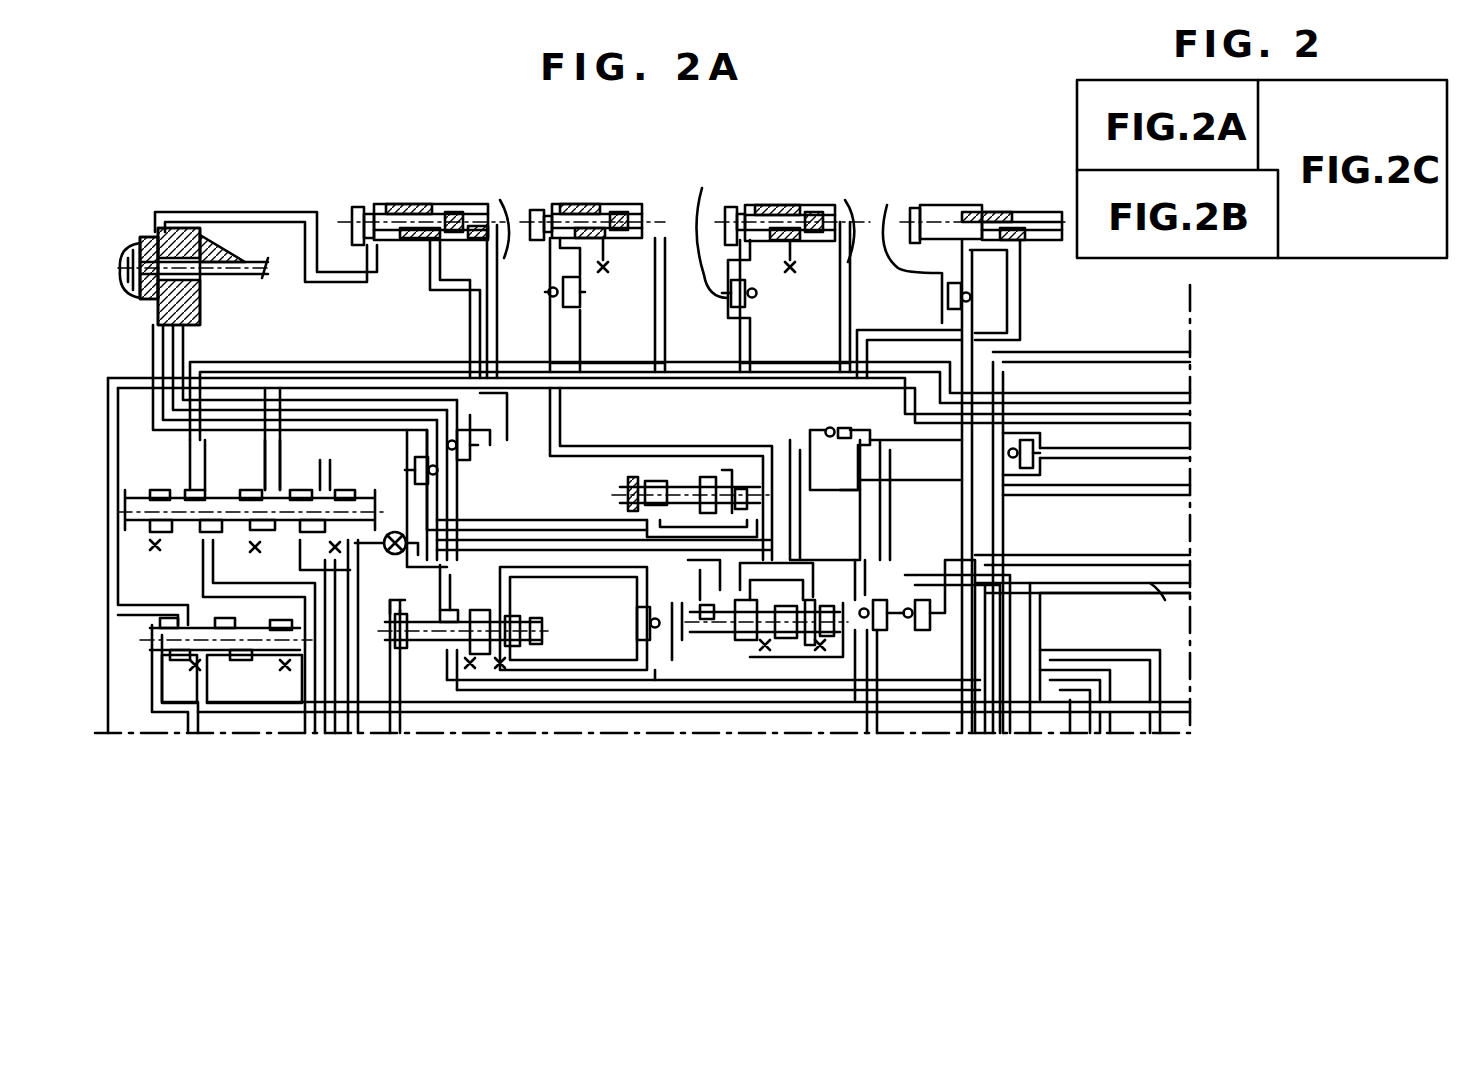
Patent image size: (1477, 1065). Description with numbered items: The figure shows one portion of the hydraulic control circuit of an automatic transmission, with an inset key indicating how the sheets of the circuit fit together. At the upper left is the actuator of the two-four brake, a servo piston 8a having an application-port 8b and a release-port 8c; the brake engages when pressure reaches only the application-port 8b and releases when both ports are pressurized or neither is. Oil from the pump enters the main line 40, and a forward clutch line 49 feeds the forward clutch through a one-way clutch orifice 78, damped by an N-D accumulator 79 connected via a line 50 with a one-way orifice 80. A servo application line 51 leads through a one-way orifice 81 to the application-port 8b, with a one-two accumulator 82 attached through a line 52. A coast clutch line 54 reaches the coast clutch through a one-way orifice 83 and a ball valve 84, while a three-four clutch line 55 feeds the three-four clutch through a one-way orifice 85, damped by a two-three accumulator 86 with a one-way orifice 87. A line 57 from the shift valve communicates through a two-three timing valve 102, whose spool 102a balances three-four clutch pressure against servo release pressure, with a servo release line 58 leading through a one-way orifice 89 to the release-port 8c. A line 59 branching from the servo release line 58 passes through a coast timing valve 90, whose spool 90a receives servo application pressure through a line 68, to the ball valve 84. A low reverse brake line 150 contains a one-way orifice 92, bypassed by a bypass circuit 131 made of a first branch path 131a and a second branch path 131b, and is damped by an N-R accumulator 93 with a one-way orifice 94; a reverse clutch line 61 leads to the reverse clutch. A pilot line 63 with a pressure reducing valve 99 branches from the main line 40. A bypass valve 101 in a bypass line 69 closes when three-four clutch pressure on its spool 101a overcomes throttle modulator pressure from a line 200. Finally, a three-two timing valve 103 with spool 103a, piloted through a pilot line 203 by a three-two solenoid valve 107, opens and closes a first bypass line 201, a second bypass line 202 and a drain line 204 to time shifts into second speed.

The actuator of the 2-4 brake (servo piston) 8a is at (114, 250).
The application-port 8b is at (160, 230).
The release-port 8c is at (215, 262).
The main line 40 is at (120, 702).
The forward clutch line 49 is at (1175, 378).
The line 50 is at (758, 336).
The servo application line 51 is at (375, 415).
The line 52 is at (286, 212).
The coast clutch line 54 is at (802, 522).
The 3-4 clutch line 55 is at (920, 470).
The line 57 is at (1100, 652).
The servo release line 58 is at (455, 503).
The line 59 is at (735, 470).
The reverse clutch line 61 is at (1012, 378).
The pilot line 63 is at (606, 733).
The line 68 is at (565, 528).
The bypass line 69 is at (575, 700).
The one-way clutch orifice 78 is at (1040, 467).
The N-D accumulator 79 is at (776, 203).
The one-way orifice 80 is at (704, 240).
The one-way orifice 81 is at (410, 440).
The 1-2 accumulator 82 is at (422, 203).
The one-way orifice 83 is at (893, 690).
The ball valve 84 is at (822, 428).
The one-way orifice 85 is at (636, 625).
The 2-3 accumulator 86 is at (596, 203).
The one-way orifice 87 is at (582, 294).
The one-way orifice 89 is at (480, 430).
The coast timing valve 90 is at (635, 468).
The spool 90a is at (740, 490).
The one-way orifice 92 is at (955, 690).
The N-R accumulator 93 is at (944, 205).
The one-way orifice 94 is at (885, 240).
The pressure reducing valve 99 is at (240, 700).
The bypass valve 101 is at (533, 608).
The spool 101a is at (500, 700).
The 2-3 timing valve 102 is at (828, 660).
The spool 102a is at (772, 690).
The 3-2 timing valve 103 is at (175, 497).
The spool 103a is at (232, 470).
The 3-2 solenoid valve 107 is at (435, 690).
The bypass circuit 131 is at (1082, 708).
The first branch path 131a is at (1100, 715).
The second branch path 131b is at (1035, 618).
The low reverse brake line 150 is at (1175, 605).
The line 200 is at (403, 560).
The first bypass line 201 is at (310, 470).
The second bypass line 202 is at (265, 700).
The pilot line 203 is at (345, 700).
The drain line 204 is at (286, 445).